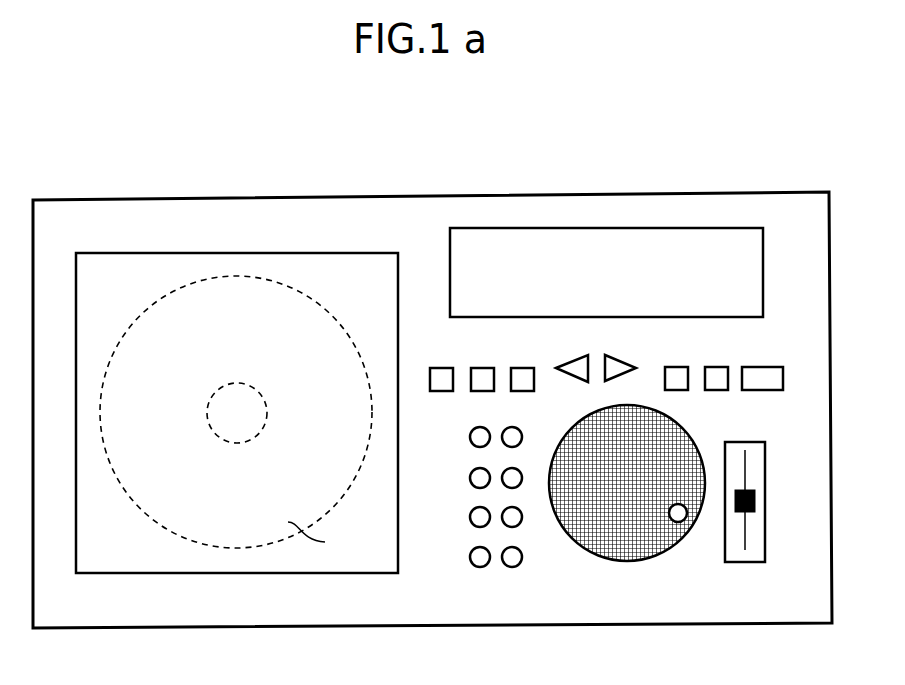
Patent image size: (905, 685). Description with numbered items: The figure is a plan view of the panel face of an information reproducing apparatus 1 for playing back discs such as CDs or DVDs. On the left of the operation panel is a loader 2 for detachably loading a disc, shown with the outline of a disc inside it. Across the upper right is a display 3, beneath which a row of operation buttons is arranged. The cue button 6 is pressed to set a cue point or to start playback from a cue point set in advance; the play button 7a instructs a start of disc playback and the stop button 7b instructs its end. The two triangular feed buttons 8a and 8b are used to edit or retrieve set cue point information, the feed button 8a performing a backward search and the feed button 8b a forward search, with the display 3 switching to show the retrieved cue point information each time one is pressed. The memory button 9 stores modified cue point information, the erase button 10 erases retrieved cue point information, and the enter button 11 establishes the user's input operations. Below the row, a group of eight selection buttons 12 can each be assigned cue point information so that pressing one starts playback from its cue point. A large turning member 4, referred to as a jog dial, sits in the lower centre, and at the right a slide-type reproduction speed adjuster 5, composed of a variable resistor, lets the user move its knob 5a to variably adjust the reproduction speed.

The information reproducing apparatus 1 is at (400, 196).
The loader 2 is at (140, 275).
The display 3 is at (634, 249).
The turning member 4 is at (632, 530).
The reproduction speed adjuster 5 is at (753, 442).
The knob 5a is at (756, 500).
The cue button 6 is at (444, 367).
The play button 7a is at (485, 367).
The stop button 7b is at (525, 367).
The feed button 8a is at (570, 364).
The feed button 8b is at (622, 364).
The memory button 9 is at (680, 367).
The erase button 10 is at (723, 367).
The enter button 11 is at (773, 367).
The selection buttons 12 is at (460, 423).